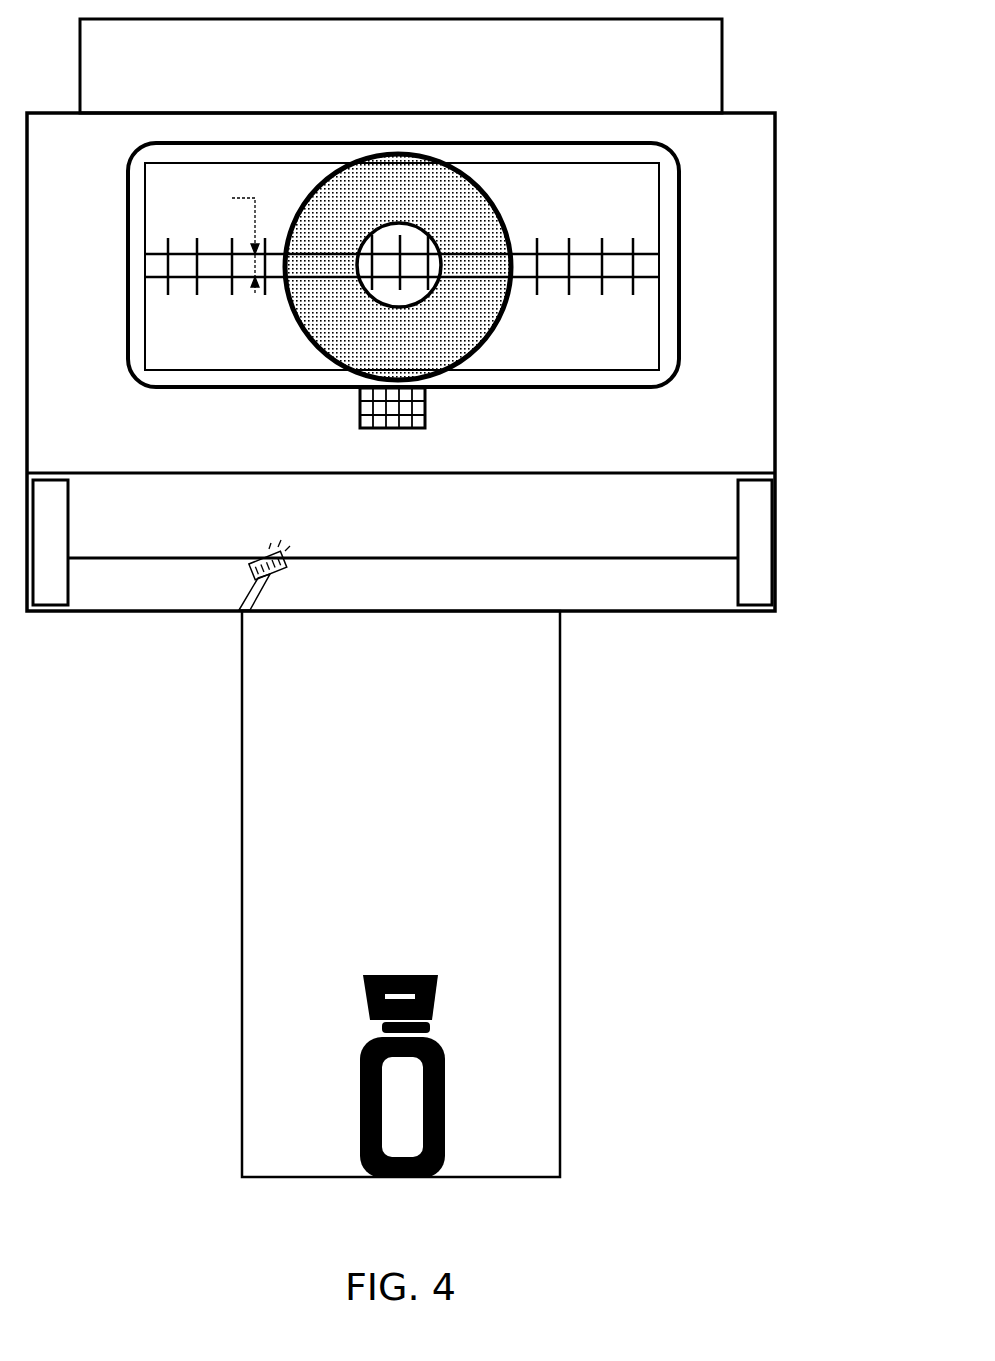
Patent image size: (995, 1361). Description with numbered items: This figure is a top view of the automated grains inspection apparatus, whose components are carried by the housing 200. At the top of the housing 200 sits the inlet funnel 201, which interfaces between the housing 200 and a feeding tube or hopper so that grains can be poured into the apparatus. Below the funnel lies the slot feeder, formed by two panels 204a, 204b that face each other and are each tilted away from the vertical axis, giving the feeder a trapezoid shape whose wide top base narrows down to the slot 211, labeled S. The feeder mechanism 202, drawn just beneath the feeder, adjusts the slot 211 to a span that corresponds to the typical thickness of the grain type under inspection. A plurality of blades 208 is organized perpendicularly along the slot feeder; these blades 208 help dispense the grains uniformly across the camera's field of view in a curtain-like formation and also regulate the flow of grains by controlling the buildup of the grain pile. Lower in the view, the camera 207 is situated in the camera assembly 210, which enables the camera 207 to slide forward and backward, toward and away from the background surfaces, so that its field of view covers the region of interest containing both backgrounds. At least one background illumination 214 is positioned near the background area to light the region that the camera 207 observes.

The housing 200 is at (775, 291).
The inlet funnel 201 is at (387, 153).
The feeder mechanism 202 is at (360, 412).
The panel 204a is at (157, 293).
The panel 204b is at (172, 200).
The camera 207 is at (445, 1080).
The blades 208 is at (380, 232).
The camera assembly 210 is at (560, 818).
The slot 211 is at (253, 213).
The background illumination 214 is at (238, 612).